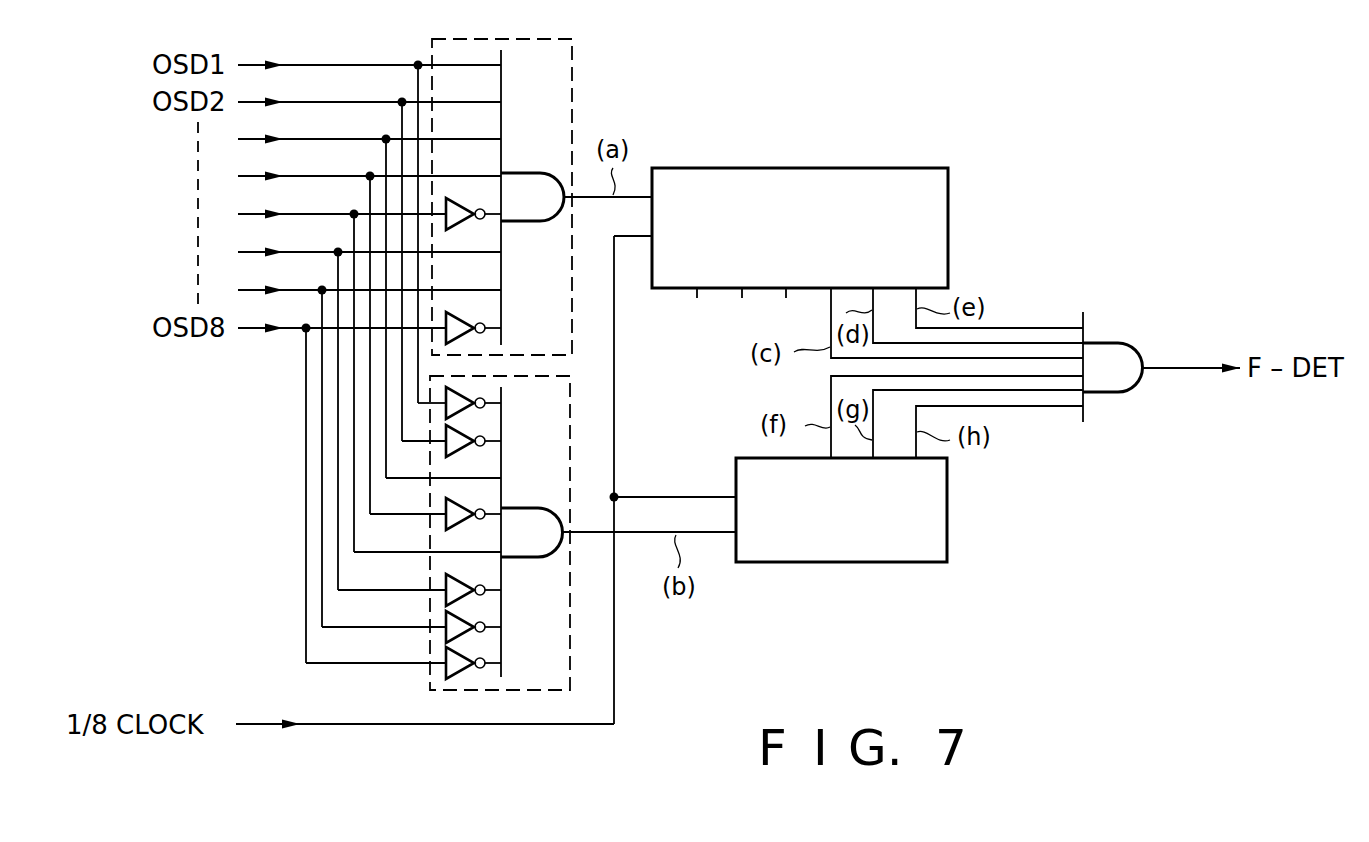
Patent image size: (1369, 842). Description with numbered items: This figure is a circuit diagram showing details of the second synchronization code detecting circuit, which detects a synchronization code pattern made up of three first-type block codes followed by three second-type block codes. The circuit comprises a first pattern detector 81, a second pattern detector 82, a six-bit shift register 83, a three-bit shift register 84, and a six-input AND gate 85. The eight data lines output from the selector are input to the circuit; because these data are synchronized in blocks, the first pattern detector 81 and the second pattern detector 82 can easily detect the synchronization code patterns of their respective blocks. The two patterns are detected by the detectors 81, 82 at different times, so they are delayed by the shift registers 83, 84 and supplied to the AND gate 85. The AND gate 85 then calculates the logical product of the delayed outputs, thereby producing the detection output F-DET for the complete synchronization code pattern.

The A1 pattern detector 81 is at (572, 93).
The A2 pattern detector 82 is at (430, 688).
The 6-bit shift register 83 is at (878, 168).
The 3-bit shift register 84 is at (948, 545).
The 6-input AND gate 85 is at (1118, 343).